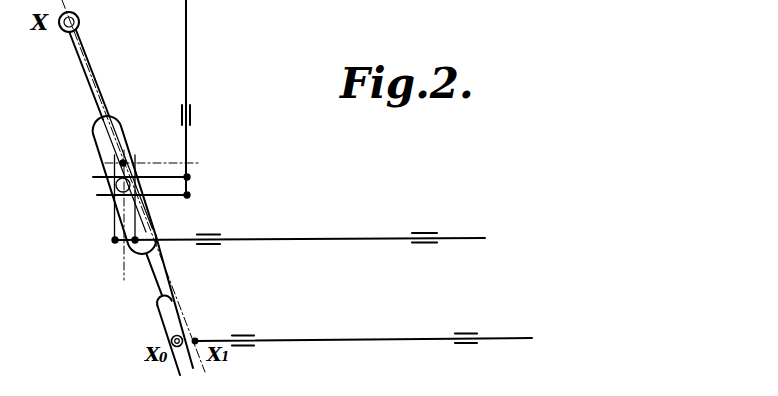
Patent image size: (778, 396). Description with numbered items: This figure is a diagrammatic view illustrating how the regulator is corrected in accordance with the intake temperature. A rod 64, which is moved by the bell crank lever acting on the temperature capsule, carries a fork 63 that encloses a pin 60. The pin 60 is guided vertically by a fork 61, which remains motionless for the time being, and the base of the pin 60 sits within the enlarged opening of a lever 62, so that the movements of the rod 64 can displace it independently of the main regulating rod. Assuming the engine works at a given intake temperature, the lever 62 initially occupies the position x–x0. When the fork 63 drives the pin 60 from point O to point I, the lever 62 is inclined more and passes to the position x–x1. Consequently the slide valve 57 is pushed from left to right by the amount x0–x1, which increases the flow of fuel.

The slide valve 57 is at (336, 339).
The pin 60 is at (147, 137).
The fork 61 is at (115, 223).
The lever 62 is at (93, 150).
The fork 63 is at (161, 175).
The rod 64 is at (187, 38).